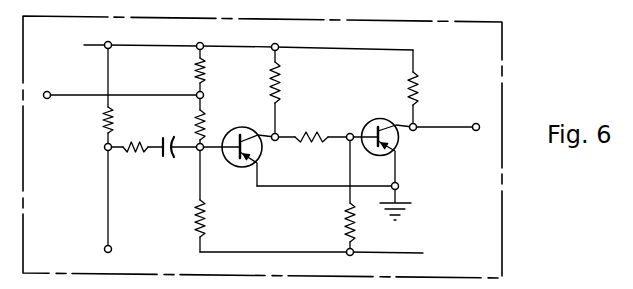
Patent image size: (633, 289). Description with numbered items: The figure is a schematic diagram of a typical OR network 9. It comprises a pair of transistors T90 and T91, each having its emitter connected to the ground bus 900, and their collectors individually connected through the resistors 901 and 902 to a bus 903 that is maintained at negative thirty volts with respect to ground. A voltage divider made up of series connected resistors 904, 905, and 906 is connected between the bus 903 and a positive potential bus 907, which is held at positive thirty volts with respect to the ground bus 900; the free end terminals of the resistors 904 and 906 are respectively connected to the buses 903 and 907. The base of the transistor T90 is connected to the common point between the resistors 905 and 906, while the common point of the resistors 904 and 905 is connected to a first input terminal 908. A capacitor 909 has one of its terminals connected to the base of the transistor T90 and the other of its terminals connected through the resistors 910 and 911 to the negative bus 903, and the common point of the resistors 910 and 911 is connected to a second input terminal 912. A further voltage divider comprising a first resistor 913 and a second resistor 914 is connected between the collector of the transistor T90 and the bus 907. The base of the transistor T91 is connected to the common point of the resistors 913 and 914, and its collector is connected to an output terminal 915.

The OR network 9 is at (503, 77).
The ground bus 900 is at (307, 188).
The resistor 901 is at (283, 90).
The resistor 902 is at (420, 76).
The bus 903 is at (258, 46).
The resistor 904 is at (196, 69).
The resistor 905 is at (212, 120).
The resistor 906 is at (208, 216).
The positive potential bus 907 is at (352, 256).
The first input terminal 908 is at (47, 92).
The capacitor 909 is at (166, 134).
The resistor 910 is at (133, 152).
The resistor 911 is at (101, 124).
The second input terminal 912 is at (105, 247).
The first resistor 913 is at (297, 130).
The second resistor 914 is at (343, 218).
The output terminal 915 is at (476, 124).
The transistor T90 is at (262, 160).
The transistor T91 is at (398, 145).